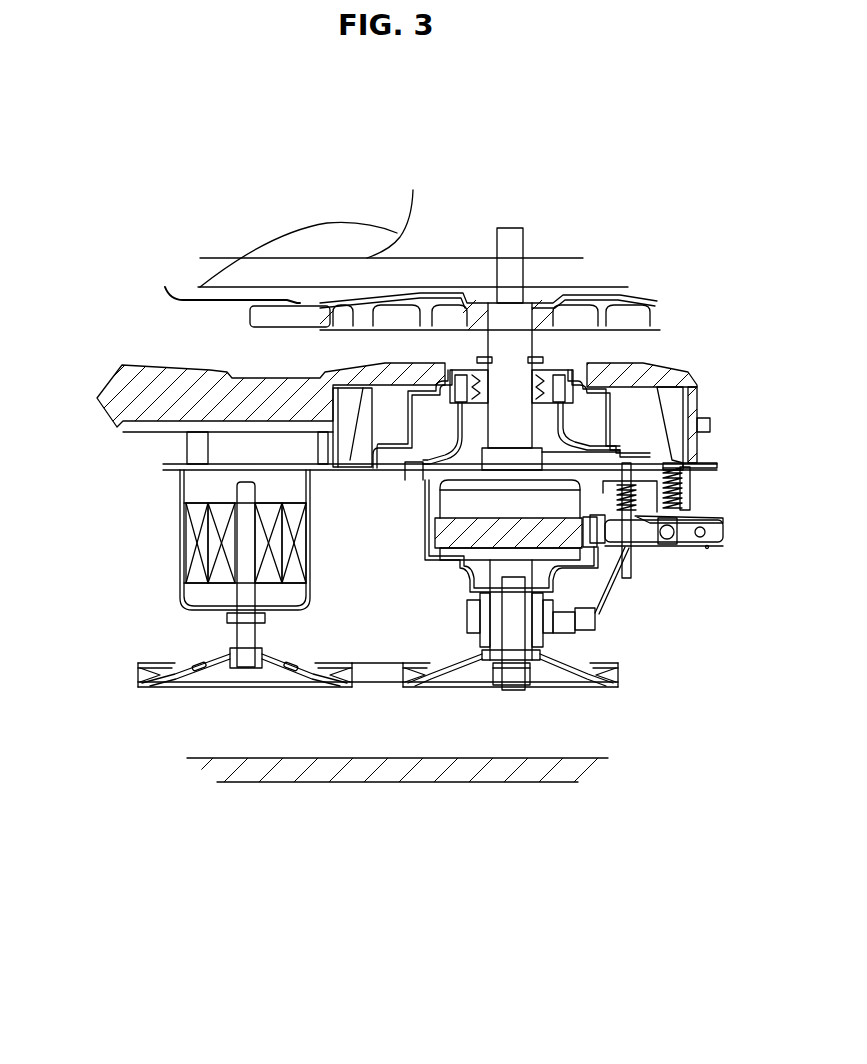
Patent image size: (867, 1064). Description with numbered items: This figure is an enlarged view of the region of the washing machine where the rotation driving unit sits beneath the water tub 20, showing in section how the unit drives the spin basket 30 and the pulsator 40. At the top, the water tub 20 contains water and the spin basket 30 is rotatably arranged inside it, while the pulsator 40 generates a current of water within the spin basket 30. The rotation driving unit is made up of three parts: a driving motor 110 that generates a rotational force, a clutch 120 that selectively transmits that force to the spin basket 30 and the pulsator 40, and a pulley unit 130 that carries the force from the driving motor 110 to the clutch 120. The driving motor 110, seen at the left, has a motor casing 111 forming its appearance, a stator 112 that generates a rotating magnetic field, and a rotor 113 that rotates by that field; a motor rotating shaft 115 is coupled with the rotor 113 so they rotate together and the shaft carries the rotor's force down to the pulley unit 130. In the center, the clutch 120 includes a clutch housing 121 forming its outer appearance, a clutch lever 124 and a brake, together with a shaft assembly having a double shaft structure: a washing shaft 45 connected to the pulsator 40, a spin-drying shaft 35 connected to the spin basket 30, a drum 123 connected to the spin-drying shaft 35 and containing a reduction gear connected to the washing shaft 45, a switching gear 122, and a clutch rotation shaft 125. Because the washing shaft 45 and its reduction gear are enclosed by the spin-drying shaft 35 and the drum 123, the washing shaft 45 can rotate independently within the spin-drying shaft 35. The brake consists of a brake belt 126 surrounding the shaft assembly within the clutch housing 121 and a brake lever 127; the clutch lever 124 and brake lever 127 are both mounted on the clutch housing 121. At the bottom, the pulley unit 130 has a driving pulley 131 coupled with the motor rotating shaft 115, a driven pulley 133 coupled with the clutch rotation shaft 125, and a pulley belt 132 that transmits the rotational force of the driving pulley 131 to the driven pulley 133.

The water tub 20 is at (177, 383).
The spin basket 30 is at (332, 316).
The spin-drying shaft 35 is at (527, 343).
The pulsator 40 is at (325, 277).
The washing shaft 45 is at (507, 228).
The driving motor 110 is at (231, 569).
The motor casing 111 is at (183, 594).
The stator 112 is at (193, 516).
The rotor 113 is at (270, 520).
The motor rotating shaft 115 is at (243, 638).
The clutch 120 is at (533, 607).
The clutch housing 121 is at (445, 538).
The switching gear 122 is at (553, 655).
The drum 123 is at (455, 497).
The clutch lever 124 is at (598, 622).
The clutch rotation shaft 125 is at (510, 675).
The brake belt 126 is at (421, 562).
The brake lever 127 is at (645, 535).
The pulley unit 130 is at (378, 783).
The driving pulley 131 is at (297, 683).
The pulley belt 132 is at (378, 683).
The driven pulley 133 is at (510, 767).